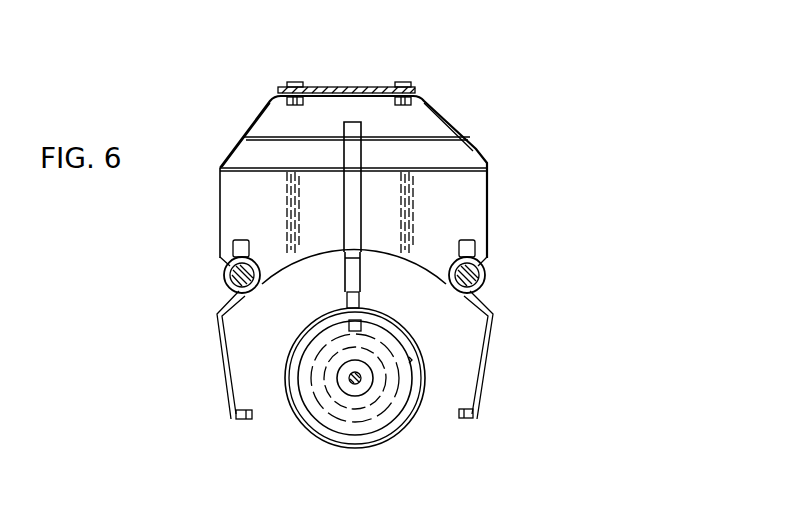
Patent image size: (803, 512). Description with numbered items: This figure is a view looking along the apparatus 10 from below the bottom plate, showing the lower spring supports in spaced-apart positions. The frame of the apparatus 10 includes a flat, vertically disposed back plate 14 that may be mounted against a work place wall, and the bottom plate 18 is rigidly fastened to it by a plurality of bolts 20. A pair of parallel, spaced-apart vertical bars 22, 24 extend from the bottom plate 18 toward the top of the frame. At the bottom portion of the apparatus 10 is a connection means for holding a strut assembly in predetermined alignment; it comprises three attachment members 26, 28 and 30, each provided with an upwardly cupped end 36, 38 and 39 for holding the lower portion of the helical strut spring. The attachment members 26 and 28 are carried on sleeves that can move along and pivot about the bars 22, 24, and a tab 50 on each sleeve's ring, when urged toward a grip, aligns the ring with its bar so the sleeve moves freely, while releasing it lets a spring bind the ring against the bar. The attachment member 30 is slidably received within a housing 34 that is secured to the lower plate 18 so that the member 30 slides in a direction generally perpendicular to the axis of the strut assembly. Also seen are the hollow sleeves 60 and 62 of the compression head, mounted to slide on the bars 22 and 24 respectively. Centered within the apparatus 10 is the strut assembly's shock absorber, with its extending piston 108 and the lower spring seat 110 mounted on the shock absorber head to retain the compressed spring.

The apparatus 10 is at (515, 146).
The back plate 14 is at (334, 88).
The bottom plate 18 is at (488, 203).
The bolts 20 is at (293, 82).
The vertical bar 22 is at (225, 270).
The vertical bar 24 is at (486, 265).
The attachment member 26 is at (227, 368).
The attachment member 28 is at (487, 364).
The attachment member 30 is at (361, 277).
The housing 34 is at (344, 155).
The upwardly cupped end 36 is at (242, 422).
The upwardly cupped end 38 is at (465, 418).
The upwardly cupped end 39 is at (347, 300).
The tab 50 is at (239, 240).
The hollow sleeve 60 is at (232, 280).
The hollow sleeve 62 is at (480, 283).
The piston 108 is at (350, 383).
The lower spring seat 110 is at (387, 418).